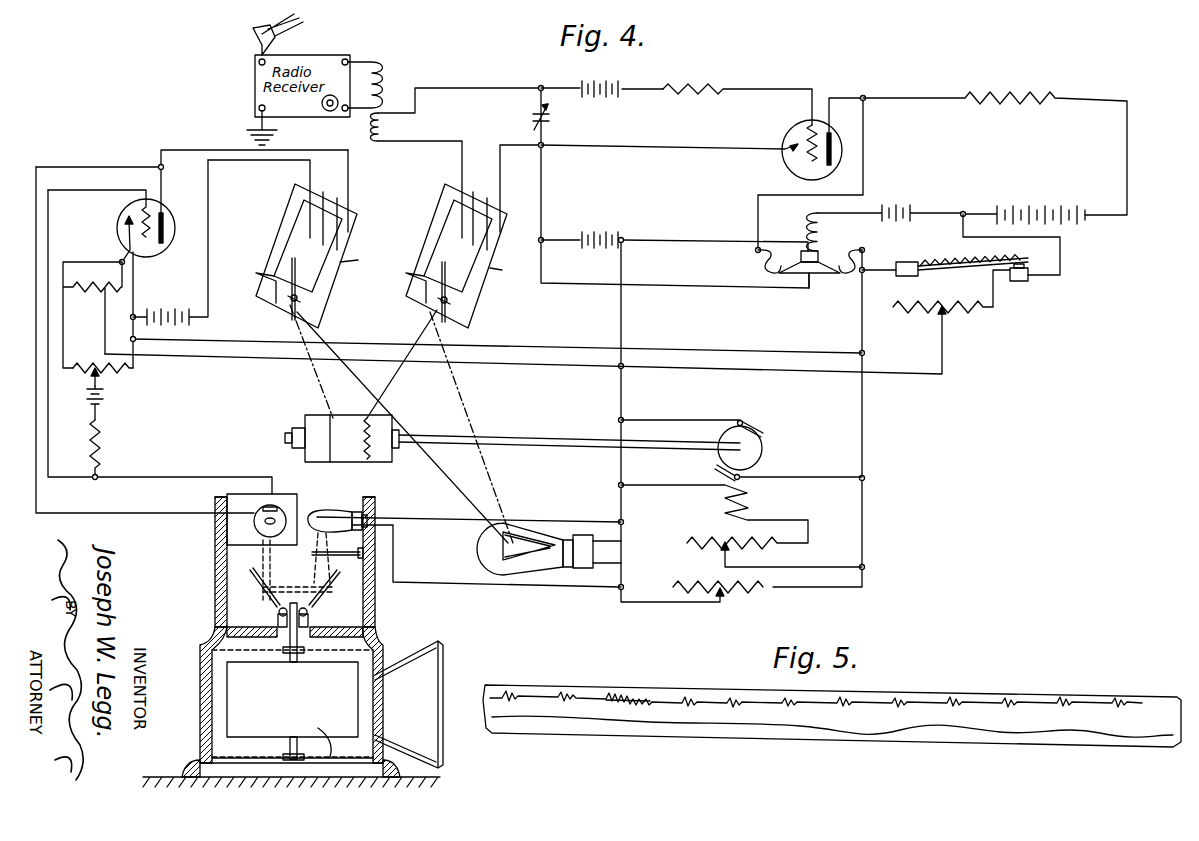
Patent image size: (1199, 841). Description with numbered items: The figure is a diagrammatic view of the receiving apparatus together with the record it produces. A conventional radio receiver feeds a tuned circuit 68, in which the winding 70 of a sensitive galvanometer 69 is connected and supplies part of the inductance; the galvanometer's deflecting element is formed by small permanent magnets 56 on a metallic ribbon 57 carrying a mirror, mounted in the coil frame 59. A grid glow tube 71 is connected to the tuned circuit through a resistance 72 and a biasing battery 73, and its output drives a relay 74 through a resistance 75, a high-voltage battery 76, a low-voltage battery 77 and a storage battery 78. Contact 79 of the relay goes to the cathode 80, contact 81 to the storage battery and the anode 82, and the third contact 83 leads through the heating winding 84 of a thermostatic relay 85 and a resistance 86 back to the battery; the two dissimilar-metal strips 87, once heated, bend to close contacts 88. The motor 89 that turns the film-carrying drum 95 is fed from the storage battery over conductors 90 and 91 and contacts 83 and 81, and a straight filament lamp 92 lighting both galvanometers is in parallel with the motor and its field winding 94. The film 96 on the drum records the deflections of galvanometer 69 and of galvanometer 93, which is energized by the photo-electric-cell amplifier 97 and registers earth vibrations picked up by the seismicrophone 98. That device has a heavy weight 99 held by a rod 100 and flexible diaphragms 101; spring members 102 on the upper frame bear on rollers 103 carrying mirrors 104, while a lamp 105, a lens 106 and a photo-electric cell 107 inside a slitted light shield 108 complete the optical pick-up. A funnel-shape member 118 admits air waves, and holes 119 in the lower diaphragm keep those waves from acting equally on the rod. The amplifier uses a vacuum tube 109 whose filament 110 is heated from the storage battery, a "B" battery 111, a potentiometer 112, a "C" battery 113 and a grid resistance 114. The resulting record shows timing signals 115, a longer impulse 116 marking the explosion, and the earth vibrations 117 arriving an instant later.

In FIG. 4, the permanent magnets 56 is at (297, 294).
In FIG. 4, the metallic ribbon 57 is at (293, 262).
In FIG. 4, the solenoid winding frame 59 is at (340, 262).
In FIG. 4, the tuned circuit 68 is at (490, 88).
In FIG. 4, the sensitive galvanometer 69 is at (423, 228).
In FIG. 4, the winding 70 is at (490, 218).
In FIG. 4, the grid glow tube 71 is at (792, 132).
In FIG. 4, the resistance 72 is at (714, 86).
In FIG. 4, the biasing battery 73 is at (592, 86).
In FIG. 4, the relay 74 is at (820, 226).
In FIG. 4, the resistance 75 is at (1018, 96).
In FIG. 4, the high-voltage battery 76 is at (1035, 210).
In FIG. 4, the low-voltage battery 77 is at (893, 208).
In FIG. 4, the storage battery 78 is at (598, 228).
In FIG. 4, the relay contact 79 is at (765, 268).
In FIG. 4, the cathode 80 is at (832, 132).
In FIG. 4, the relay contact 81 is at (812, 274).
In FIG. 4, the anode 82 is at (788, 153).
In FIG. 4, the third relay contact 83 is at (842, 253).
In FIG. 4, the heating winding 84 is at (972, 270).
In FIG. 4, the thermostatic relay 85 is at (936, 262).
In FIG. 4, the resistance 86 is at (973, 318).
In FIG. 4, the strips 87 is at (1010, 261).
In FIG. 4, the contacts 88 is at (1011, 247).
In FIG. 4, the motor 89 is at (765, 450).
In FIG. 4, the conductor 90 is at (624, 336).
In FIG. 4, the conductor 91 is at (864, 418).
In FIG. 4, the straight filament lamp 92 is at (482, 553).
In FIG. 4, the galvanometer 93 is at (268, 231).
In FIG. 4, the field winding 94 is at (757, 508).
In FIG. 4, the film-carrying drum 95 is at (393, 455).
In FIG. 4, the film 96 is at (338, 456).
In FIG. 4, the photo-electric-cell amplifier 97 is at (185, 273).
In FIG. 4, the seismicrophone 98 is at (418, 623).
In FIG. 4, the heavy weight 99 is at (292, 699).
In FIG. 4, the rod 100 is at (302, 655).
In FIG. 4, the flexible diaphragms 101 is at (264, 738).
In FIG. 4, the spring members 102 is at (278, 619).
In FIG. 4, the rollers 103 is at (280, 610).
In FIG. 4, the mirrors 104 is at (260, 574).
In FIG. 4, the straight filament lamp 105 is at (330, 510).
In FIG. 4, the lens 106 is at (312, 556).
In FIG. 4, the photo-electric cell 107 is at (268, 527).
In FIG. 4, the light shield 108 is at (292, 487).
In FIG. 4, the three-element vacuum tube 109 is at (163, 214).
In FIG. 4, the filament 110 is at (120, 229).
In FIG. 4, the "B" battery 111 is at (197, 321).
In FIG. 4, the potentiometer 112 is at (120, 372).
In FIG. 4, the "C" battery 113 is at (105, 403).
In FIG. 4, the resistance 114 is at (103, 441).
In FIG. 5, the timing signals 115 is at (613, 698).
In FIG. 5, the longer impulse 116 is at (660, 694).
In FIG. 5, the earth vibrations 117 is at (880, 735).
In FIG. 4, the funnel-shape member 118 is at (440, 738).
In FIG. 4, the holes 119 is at (330, 757).